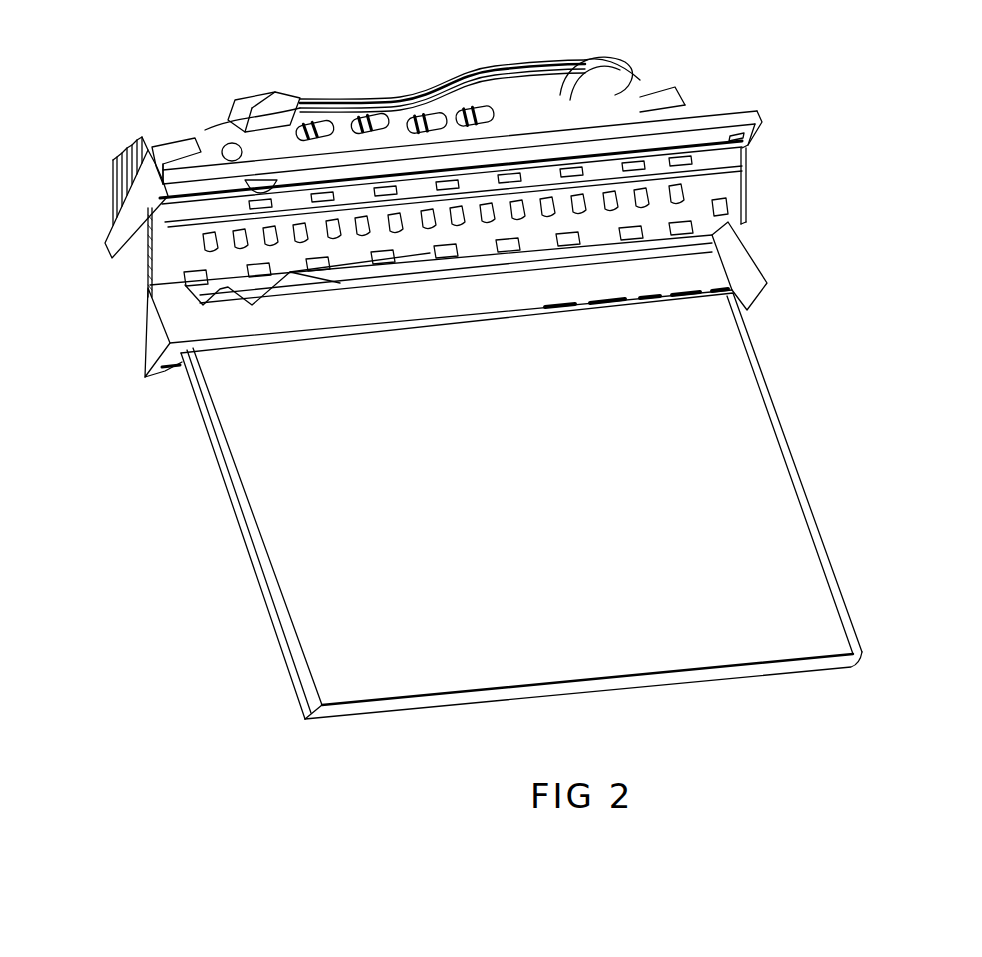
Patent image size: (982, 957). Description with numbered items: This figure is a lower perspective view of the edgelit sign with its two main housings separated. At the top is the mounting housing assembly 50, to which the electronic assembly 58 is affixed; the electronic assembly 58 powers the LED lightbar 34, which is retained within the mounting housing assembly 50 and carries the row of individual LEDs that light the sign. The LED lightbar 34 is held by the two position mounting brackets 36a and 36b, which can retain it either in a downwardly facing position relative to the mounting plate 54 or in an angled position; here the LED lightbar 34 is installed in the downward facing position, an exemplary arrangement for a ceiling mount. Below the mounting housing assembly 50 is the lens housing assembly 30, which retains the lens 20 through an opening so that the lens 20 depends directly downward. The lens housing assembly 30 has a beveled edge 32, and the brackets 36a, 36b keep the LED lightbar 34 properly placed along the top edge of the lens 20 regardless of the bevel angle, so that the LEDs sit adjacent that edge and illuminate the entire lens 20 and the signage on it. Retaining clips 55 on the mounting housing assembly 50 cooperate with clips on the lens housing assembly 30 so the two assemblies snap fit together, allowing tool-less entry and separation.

The lens 20 is at (513, 660).
The lens housing assembly 30 is at (147, 357).
The beveled edge 32 is at (743, 172).
The LED lightbar 34 is at (687, 180).
The two position mounting bracket 36a is at (176, 244).
The two position mounting bracket 36b is at (707, 193).
The mounting housing assembly 50 is at (112, 236).
The mounting plate 54 is at (647, 129).
The retaining clips 55 is at (607, 157).
The electronic assembly 58 is at (484, 60).